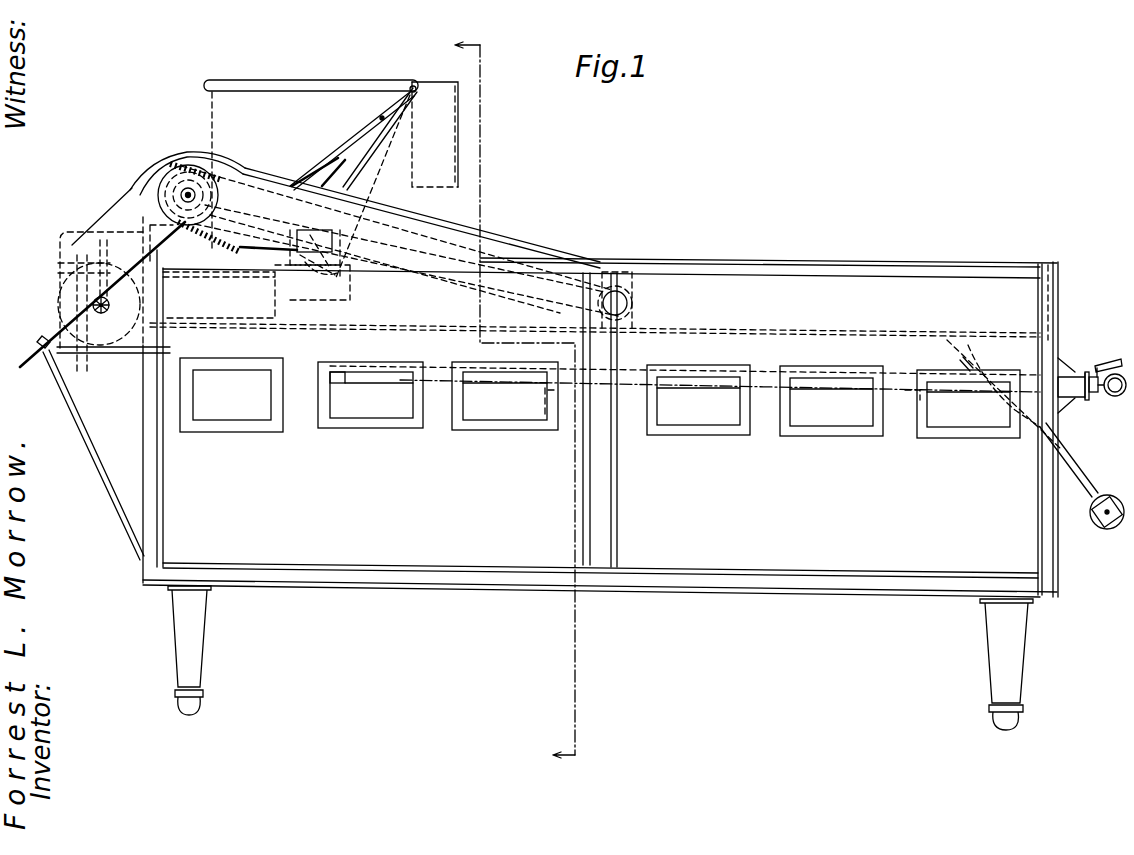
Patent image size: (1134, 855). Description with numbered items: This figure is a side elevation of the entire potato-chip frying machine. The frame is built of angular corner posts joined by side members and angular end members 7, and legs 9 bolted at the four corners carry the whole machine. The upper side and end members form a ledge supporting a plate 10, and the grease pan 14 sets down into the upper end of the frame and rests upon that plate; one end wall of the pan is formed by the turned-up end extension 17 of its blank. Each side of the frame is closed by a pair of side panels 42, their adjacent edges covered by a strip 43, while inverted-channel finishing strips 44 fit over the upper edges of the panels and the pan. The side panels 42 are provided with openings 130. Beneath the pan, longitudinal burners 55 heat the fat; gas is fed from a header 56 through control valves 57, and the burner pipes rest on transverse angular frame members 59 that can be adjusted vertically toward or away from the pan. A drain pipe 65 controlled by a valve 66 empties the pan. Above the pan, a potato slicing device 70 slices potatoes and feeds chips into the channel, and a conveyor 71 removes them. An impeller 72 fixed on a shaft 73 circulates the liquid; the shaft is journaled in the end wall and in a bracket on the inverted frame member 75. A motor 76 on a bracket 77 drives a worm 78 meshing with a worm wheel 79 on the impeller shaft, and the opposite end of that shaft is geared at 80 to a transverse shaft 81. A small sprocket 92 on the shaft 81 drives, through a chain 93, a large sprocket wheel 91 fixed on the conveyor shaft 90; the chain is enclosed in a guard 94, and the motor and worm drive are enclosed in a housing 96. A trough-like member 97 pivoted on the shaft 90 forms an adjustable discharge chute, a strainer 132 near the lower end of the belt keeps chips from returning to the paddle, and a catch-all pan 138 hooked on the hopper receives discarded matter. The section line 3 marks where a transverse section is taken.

The section line 3- 3 is at (521, 404).
The angular end member 7 is at (165, 345).
The leg 9 is at (183, 650).
The plate 10 is at (262, 320).
The grease pan 14 is at (452, 323).
The end extension 17 is at (165, 300).
The side panel 42 is at (280, 548).
The strip 43 is at (610, 490).
The finishing strip 44 is at (735, 245).
The burner 55 is at (718, 355).
The header 56 is at (1110, 395).
The control valve 57 is at (1090, 362).
The transverse angular frame member 59 is at (548, 428).
The drain pipe 65 is at (1065, 455).
The valve 66 is at (1115, 495).
The potato slicing device 70 is at (203, 86).
The conveyor 71 is at (467, 210).
The impeller 72 is at (180, 242).
The shaft 73 is at (106, 307).
The frame member 75 is at (352, 198).
The motor 76 is at (55, 290).
The bracket 77 is at (78, 405).
The worm 78 is at (90, 360).
The worm wheel 79 is at (97, 228).
The gearing 80 is at (305, 288).
The transverse shaft 81 is at (325, 285).
The shaft 90 is at (182, 187).
The sprocket wheel 91 is at (233, 165).
The sprocket 92 is at (335, 268).
The chain 93 is at (253, 180).
The guard 94 is at (190, 152).
The housing 96 is at (62, 245).
The trough-like member 97 is at (48, 340).
The opening 130 is at (467, 405).
The strainer 132 is at (640, 308).
The catch-all pan 138 is at (438, 93).